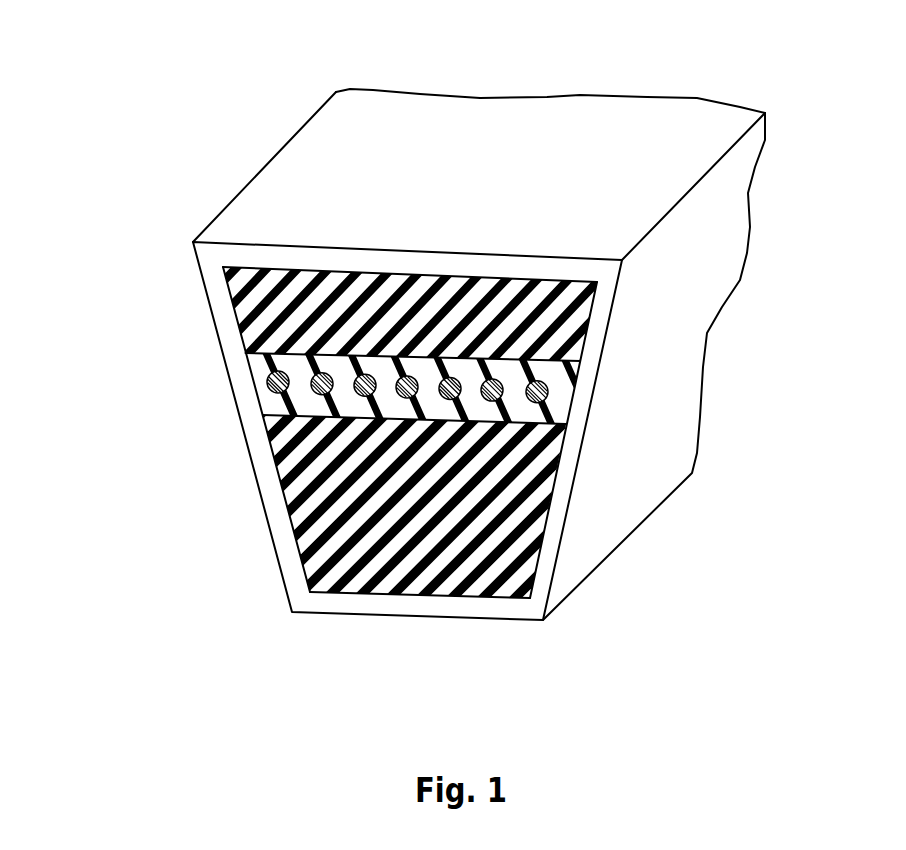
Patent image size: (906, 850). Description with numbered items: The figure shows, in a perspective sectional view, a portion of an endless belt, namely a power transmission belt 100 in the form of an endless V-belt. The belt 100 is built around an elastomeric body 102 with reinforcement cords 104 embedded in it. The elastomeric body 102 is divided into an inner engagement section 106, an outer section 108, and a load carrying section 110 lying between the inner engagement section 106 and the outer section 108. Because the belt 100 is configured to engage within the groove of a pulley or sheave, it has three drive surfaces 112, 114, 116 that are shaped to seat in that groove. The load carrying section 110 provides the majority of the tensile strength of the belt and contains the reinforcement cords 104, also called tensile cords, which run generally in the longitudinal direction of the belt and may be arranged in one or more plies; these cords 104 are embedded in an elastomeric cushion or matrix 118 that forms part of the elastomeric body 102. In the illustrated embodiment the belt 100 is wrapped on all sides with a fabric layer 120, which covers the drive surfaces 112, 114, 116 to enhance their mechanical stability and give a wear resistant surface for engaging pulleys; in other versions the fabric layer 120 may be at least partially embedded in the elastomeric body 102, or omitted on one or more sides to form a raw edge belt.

The power transmission belt 100 is at (203, 133).
The elastomeric body 102 is at (250, 283).
The reinforcement cords 104 is at (500, 422).
The inner engagement section 106 is at (313, 533).
The outer section 108 is at (262, 372).
The load carrying section 110 is at (270, 337).
The drive surface 112 is at (258, 488).
The drive surface 114 is at (422, 620).
The drive surface 116 is at (640, 498).
The elastomeric cushion or matrix 118 is at (553, 366).
The fabric layer 120 is at (312, 258).